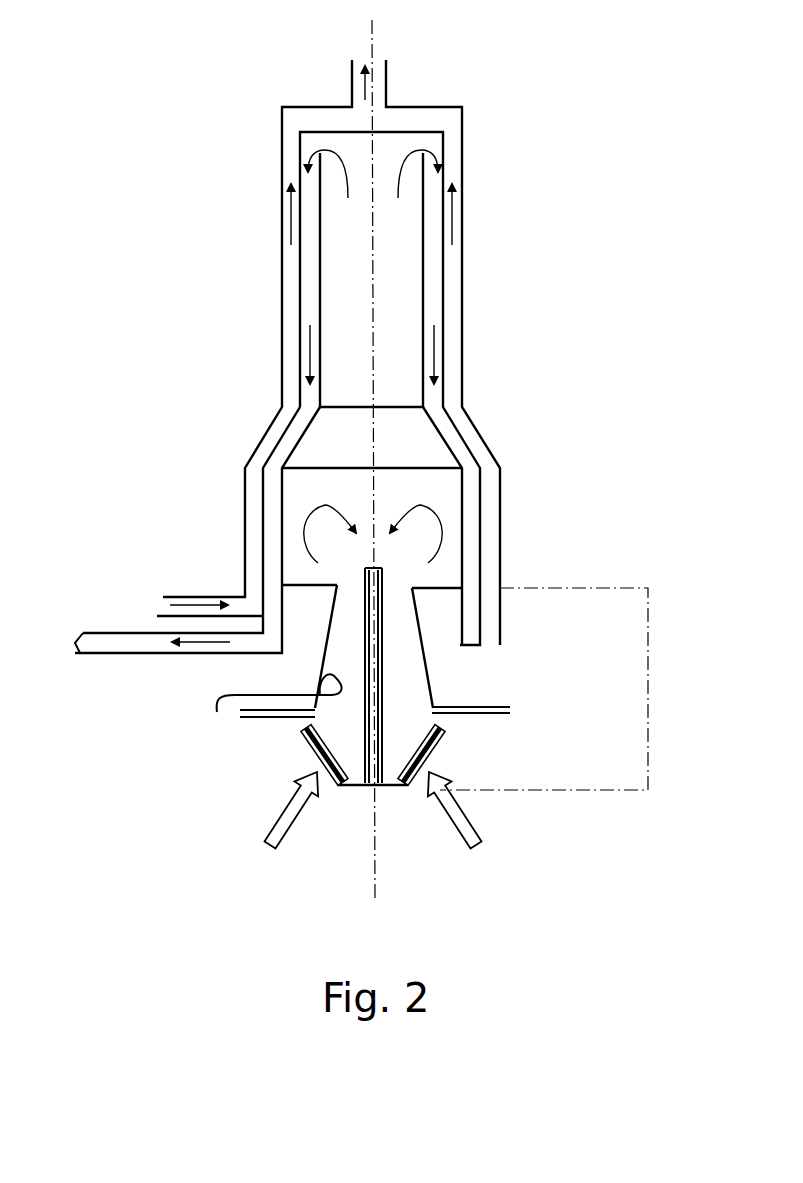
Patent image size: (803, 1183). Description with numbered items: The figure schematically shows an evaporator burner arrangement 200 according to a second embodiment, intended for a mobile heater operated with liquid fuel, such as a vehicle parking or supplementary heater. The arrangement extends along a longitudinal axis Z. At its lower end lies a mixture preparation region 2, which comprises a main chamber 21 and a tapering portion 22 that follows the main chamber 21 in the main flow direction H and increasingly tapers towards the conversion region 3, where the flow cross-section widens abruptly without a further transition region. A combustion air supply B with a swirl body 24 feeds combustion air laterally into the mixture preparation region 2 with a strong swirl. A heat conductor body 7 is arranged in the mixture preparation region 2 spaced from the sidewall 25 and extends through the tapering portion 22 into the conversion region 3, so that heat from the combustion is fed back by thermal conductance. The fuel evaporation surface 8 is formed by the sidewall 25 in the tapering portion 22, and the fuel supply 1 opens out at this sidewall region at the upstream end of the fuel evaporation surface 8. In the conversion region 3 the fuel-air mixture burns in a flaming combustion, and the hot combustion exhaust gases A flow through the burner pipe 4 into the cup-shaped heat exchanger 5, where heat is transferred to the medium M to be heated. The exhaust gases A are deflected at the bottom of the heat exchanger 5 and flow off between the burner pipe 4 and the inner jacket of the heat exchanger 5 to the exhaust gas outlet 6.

The evaporator burner arrangement 200 is at (593, 167).
The fuel supply 1 is at (263, 717).
The mixture preparation region 2 is at (648, 688).
The conversion region 3 is at (437, 492).
The burner pipe 4 is at (407, 297).
The heat exchanger 5 is at (445, 160).
The exhaust gas outlet 6 is at (112, 642).
The heat conductor body 7 is at (362, 745).
The fuel evaporation surface 8 is at (272, 713).
The main chamber 21 is at (410, 730).
The tapering portion 22 is at (413, 667).
The swirl body 24 is at (321, 760).
The sidewall 25 is at (322, 642).
The longitudinal axis Z is at (373, 54).
The combustion exhaust gases A is at (327, 142).
The medium to be heated M is at (290, 223).
The main flow direction H is at (363, 234).
The combustion air supply B is at (270, 823).